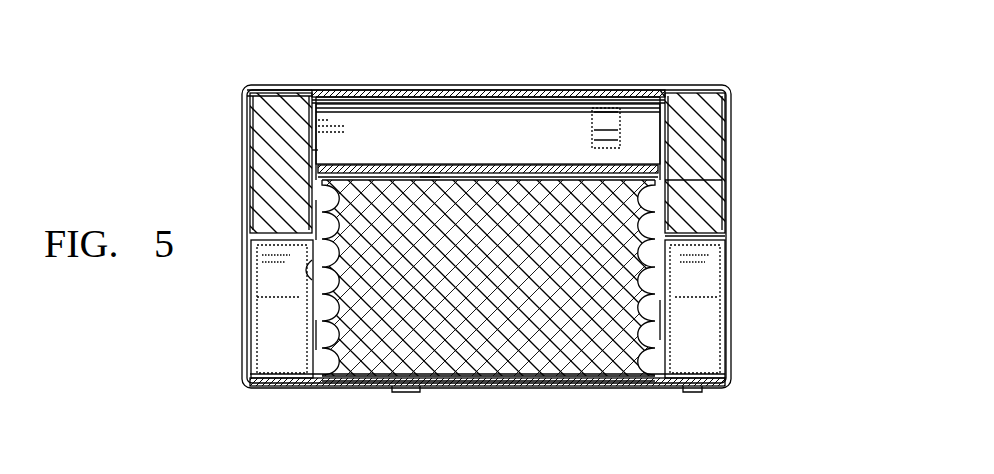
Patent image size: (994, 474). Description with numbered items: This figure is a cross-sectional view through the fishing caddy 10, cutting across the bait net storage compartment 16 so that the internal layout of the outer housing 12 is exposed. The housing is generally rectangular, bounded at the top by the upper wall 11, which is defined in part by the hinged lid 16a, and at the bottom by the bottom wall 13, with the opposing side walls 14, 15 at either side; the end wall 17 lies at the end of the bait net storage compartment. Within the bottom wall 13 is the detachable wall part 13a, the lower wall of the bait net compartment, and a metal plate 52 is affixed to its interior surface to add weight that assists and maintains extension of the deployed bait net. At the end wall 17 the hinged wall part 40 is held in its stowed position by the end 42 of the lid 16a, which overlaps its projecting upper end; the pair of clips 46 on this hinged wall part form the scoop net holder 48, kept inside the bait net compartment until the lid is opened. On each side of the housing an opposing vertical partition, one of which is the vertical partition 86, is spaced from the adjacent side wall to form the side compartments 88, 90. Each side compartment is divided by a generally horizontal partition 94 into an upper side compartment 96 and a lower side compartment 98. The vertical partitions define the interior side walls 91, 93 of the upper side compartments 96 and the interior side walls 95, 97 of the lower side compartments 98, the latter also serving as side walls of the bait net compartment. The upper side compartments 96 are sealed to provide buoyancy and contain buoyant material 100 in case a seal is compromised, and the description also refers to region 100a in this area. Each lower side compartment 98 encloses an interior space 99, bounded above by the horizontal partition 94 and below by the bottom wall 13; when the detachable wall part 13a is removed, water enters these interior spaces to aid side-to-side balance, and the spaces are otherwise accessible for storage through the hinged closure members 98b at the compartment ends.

The fishing caddy 10 is at (262, 48).
The top or upper wall 11 is at (727, 92).
The outer housing 12 is at (250, 88).
The bottom wall 13 is at (690, 393).
The detachable wall part 13a is at (405, 396).
The side wall 14 is at (247, 103).
The side wall 15 is at (740, 252).
The bait net storage compartment 16 is at (486, 302).
The hinged lid 16a is at (597, 95).
The end wall 17 is at (478, 390).
The hinged wall part 40 is at (474, 104).
The end of lid 42 is at (527, 95).
The clips 46 is at (650, 96).
The scoop net holder 48 is at (440, 100).
The metal plate 52 is at (548, 390).
The vertical partition 86 is at (738, 186).
The side compartment 88 is at (248, 140).
The side compartment 90 is at (735, 122).
The interior side wall 91 is at (706, 85).
The interior side wall 93 is at (325, 122).
The horizontal partition 94 is at (244, 198).
The interior side wall 95 is at (640, 318).
The upper side compartment 96 is at (244, 170).
The interior side wall 97 is at (336, 345).
The lower side compartment 98 is at (250, 332).
The hinged closure member 98b is at (246, 286).
The interior space 99 is at (252, 362).
The buoyant material 100 is at (290, 92).
The shelf tab 100a is at (428, 182).